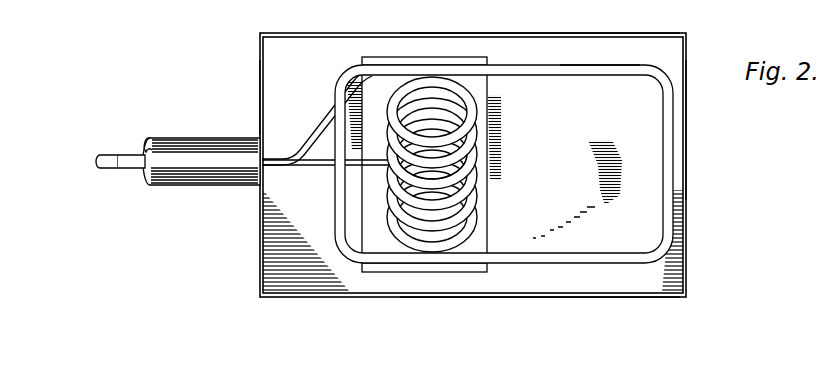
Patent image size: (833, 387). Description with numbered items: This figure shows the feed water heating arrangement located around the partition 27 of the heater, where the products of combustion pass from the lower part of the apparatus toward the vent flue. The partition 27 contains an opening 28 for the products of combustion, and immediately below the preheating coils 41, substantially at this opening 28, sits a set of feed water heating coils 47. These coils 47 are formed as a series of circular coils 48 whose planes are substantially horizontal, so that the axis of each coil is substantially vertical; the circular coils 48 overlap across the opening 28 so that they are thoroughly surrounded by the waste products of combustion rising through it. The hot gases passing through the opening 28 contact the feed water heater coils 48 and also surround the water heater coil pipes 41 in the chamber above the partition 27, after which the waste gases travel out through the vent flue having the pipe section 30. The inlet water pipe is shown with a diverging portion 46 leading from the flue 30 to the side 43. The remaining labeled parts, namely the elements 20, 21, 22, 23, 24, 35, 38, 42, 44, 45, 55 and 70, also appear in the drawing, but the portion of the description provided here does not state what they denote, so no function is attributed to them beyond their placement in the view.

The receiving unit housing 20 is at (692, 127).
The support member 21 is at (748, 0).
The housing end wall 22 is at (687, 105).
The housing end wall 23 is at (260, 104).
The housing side wall 24 is at (575, 36).
The partition 27 is at (607, 120).
The opening 28 is at (487, 198).
The flue pipe section 30 is at (207, 148).
The support 35 is at (241, 6).
The support 38 is at (409, 4).
The preheating coils 41 is at (493, 73).
The lower plate 42 is at (537, 262).
The side 43 is at (588, 74).
The conductor frame 44 is at (338, 213).
The lining 45 is at (667, 207).
The diverging portion 46 is at (133, 163).
The feed water heating coils 47 is at (478, 114).
The circular coils 48 is at (468, 146).
The support 55 is at (793, 0).
The inner conductor 70 is at (102, 164).